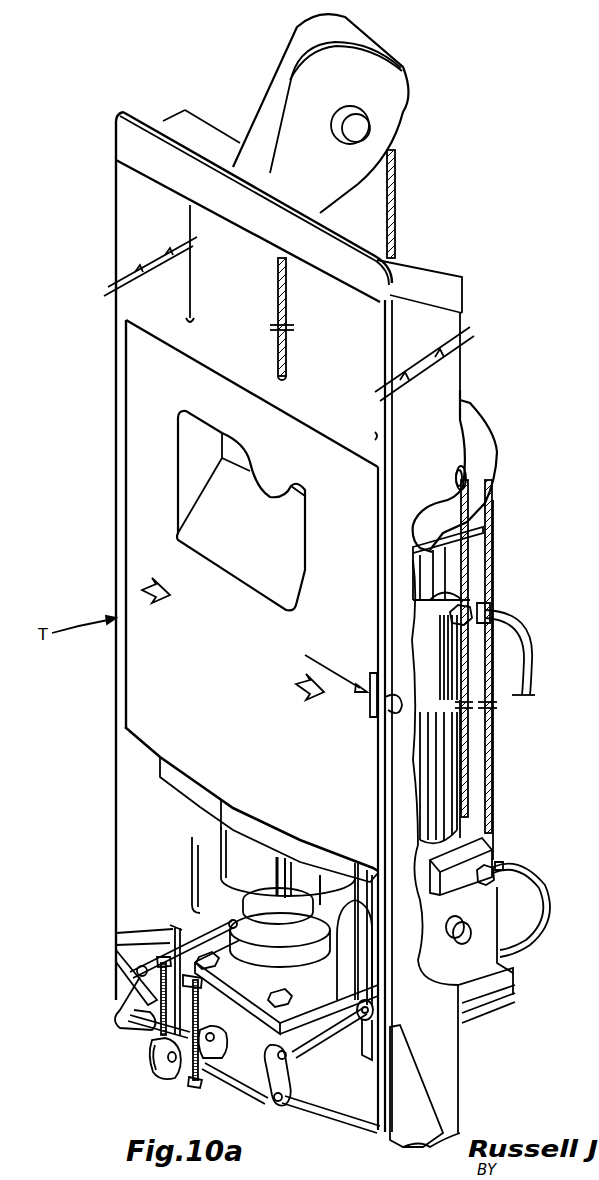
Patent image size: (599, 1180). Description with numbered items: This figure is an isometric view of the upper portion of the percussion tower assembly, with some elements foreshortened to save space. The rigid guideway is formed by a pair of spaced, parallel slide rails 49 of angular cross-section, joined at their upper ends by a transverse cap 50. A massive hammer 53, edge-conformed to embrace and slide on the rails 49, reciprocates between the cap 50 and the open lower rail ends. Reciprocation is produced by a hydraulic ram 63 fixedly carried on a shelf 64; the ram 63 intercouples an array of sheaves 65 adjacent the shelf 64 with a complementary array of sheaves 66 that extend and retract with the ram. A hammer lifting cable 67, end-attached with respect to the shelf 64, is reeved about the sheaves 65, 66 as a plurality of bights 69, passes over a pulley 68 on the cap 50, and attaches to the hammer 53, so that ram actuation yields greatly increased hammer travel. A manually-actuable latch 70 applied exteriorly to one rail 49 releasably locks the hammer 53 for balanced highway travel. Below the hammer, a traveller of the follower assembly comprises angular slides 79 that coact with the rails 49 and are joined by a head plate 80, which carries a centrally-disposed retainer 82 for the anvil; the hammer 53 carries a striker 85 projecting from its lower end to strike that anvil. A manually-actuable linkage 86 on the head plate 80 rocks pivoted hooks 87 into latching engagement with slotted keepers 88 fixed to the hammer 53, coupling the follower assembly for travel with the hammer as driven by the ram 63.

The slide rails 49 is at (170, 296).
The transverse cap 50 is at (277, 231).
The hammer 53 is at (195, 696).
The hydraulic ram 63 is at (450, 747).
The shelf 64 is at (487, 1000).
The sheaves 65 is at (488, 965).
The sheaves 66 is at (486, 448).
The hammer lifting cable 67 is at (290, 335).
The pulley 68 is at (321, 190).
The bights 69 is at (470, 567).
The latch 70 is at (398, 707).
The slides 79 is at (125, 945).
The head plate 80 is at (365, 1083).
The retainer 82 is at (272, 1015).
The striker 85 is at (277, 986).
The manually-actuable linkage 86 is at (143, 1053).
The hooks 87 is at (192, 868).
The slotted keepers 88 is at (380, 922).